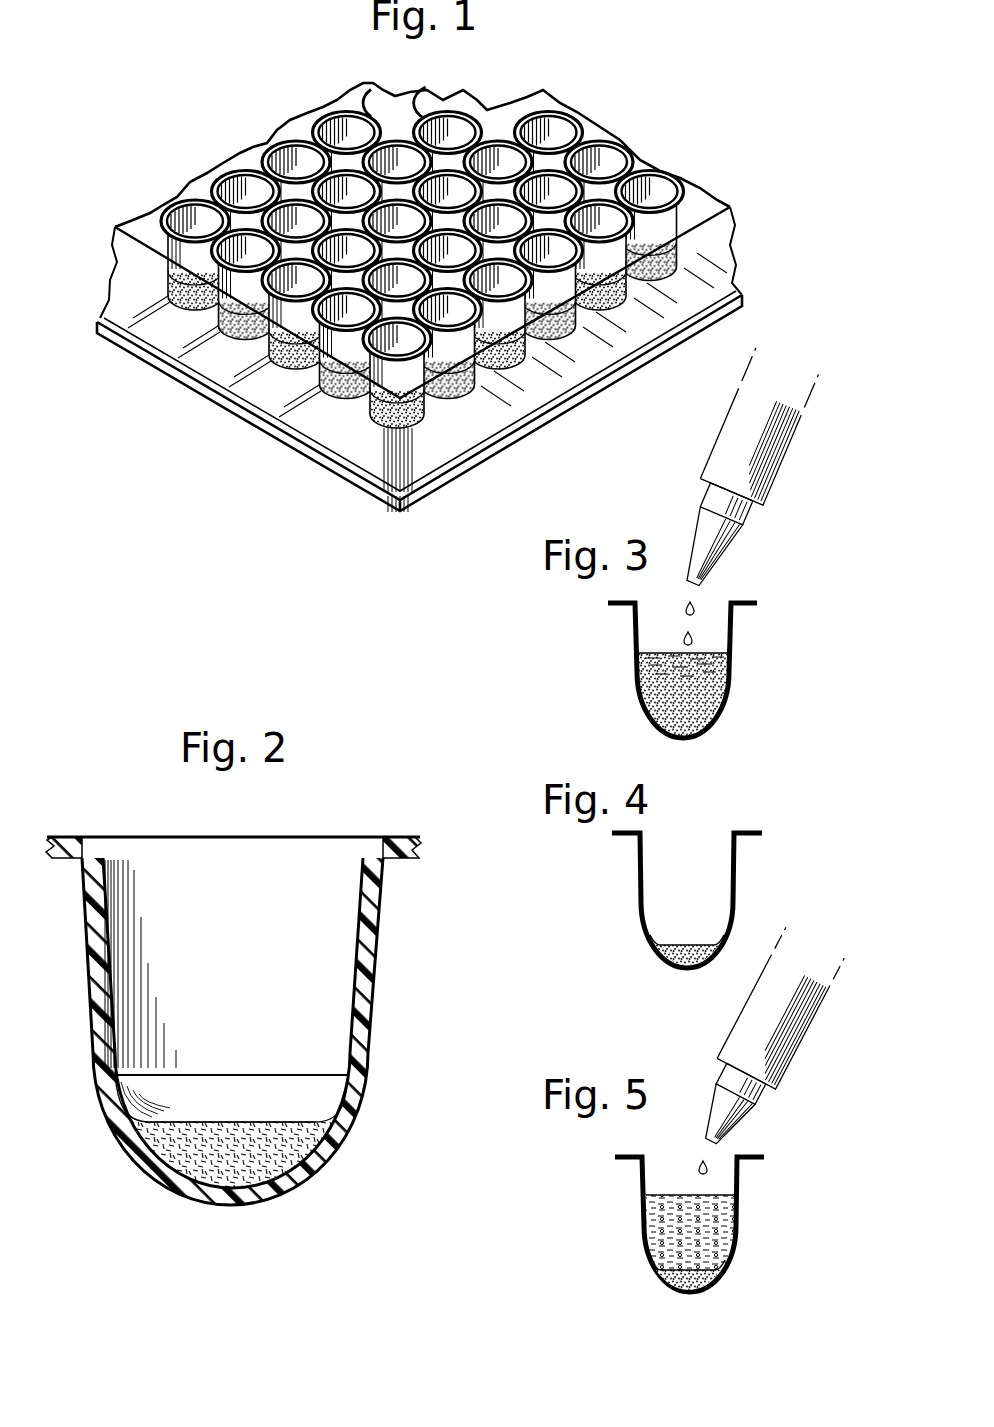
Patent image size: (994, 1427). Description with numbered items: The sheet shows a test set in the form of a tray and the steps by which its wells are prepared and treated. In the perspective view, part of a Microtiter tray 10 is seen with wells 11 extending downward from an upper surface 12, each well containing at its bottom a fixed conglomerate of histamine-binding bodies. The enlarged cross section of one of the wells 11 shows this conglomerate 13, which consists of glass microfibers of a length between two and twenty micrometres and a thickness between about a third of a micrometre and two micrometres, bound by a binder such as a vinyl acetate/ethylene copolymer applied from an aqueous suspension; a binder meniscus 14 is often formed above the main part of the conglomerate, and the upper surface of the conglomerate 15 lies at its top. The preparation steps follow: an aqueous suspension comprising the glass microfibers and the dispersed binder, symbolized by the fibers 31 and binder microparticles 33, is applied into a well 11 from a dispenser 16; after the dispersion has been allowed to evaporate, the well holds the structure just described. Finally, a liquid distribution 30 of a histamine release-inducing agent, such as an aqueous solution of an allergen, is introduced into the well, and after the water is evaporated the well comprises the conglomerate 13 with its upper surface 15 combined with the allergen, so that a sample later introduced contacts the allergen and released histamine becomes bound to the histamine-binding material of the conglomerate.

In FIG. 1, the Microtiter tray 10 is at (239, 138).
In FIG. 1, the wells 11 is at (345, 122).
In FIG. 2, the wells 11 is at (342, 942).
In FIG. 3, the wells 11 is at (733, 632).
In FIG. 4, the wells 11 is at (640, 883).
In FIG. 5, the wells 11 is at (742, 1193).
In FIG. 1, the upper surface 12 is at (148, 228).
In FIG. 2, the conglomerate 13 is at (273, 1160).
In FIG. 4, the conglomerate 13 is at (668, 968).
In FIG. 5, the conglomerate 13 is at (673, 1293).
In FIG. 2, the binder meniscus 14 is at (342, 1097).
In FIG. 4, the binder meniscus 14 is at (650, 927).
In FIG. 5, the binder meniscus 14 is at (660, 1258).
In FIG. 2, the upper surface of the conglomerate 15 is at (207, 1122).
In FIG. 4, the upper surface of the conglomerate 15 is at (690, 970).
In FIG. 5, the upper surface of the conglomerate 15 is at (695, 1293).
In FIG. 3, the dispenser 16 is at (781, 470).
In FIG. 5, the dispenser 16 is at (791, 1060).
In FIG. 5, the liquid distribution 30 is at (660, 1230).
In FIG. 3, the fibers 31 is at (733, 700).
In FIG. 3, the dispersed binder microparticles 33 is at (710, 693).